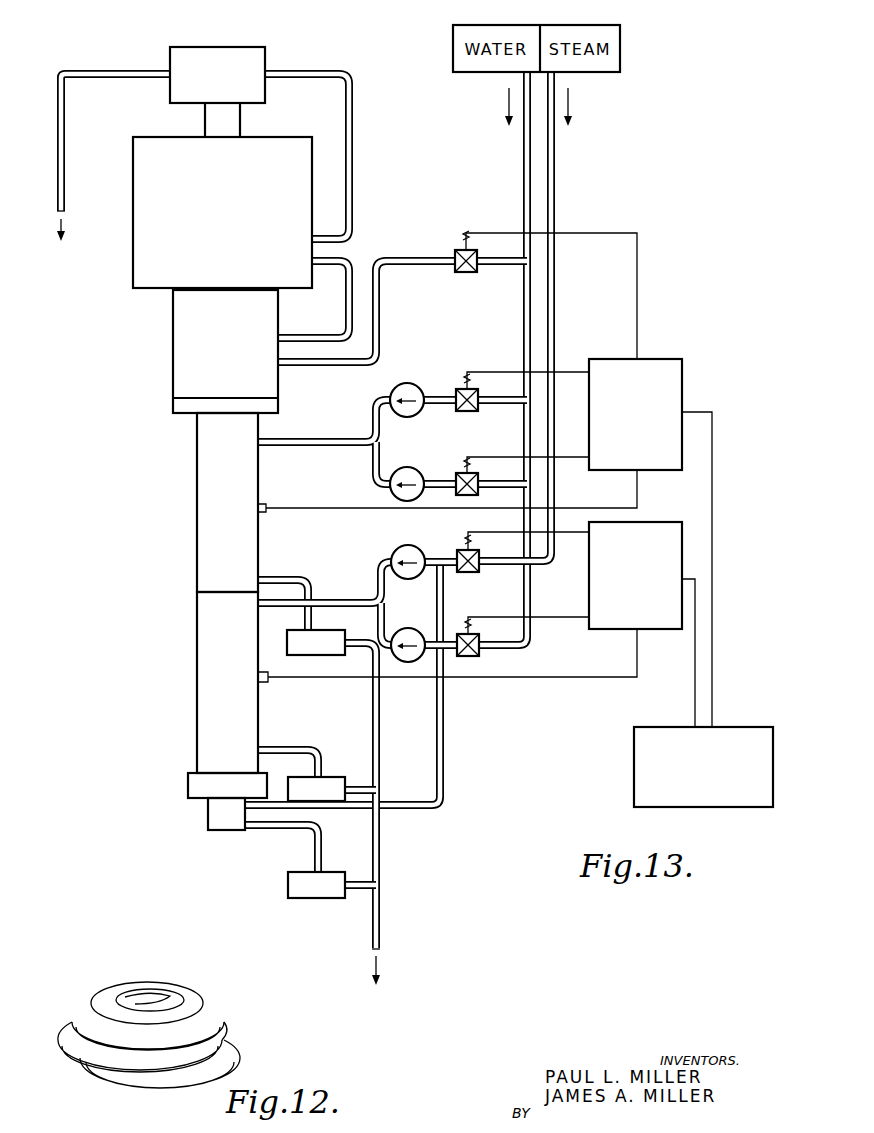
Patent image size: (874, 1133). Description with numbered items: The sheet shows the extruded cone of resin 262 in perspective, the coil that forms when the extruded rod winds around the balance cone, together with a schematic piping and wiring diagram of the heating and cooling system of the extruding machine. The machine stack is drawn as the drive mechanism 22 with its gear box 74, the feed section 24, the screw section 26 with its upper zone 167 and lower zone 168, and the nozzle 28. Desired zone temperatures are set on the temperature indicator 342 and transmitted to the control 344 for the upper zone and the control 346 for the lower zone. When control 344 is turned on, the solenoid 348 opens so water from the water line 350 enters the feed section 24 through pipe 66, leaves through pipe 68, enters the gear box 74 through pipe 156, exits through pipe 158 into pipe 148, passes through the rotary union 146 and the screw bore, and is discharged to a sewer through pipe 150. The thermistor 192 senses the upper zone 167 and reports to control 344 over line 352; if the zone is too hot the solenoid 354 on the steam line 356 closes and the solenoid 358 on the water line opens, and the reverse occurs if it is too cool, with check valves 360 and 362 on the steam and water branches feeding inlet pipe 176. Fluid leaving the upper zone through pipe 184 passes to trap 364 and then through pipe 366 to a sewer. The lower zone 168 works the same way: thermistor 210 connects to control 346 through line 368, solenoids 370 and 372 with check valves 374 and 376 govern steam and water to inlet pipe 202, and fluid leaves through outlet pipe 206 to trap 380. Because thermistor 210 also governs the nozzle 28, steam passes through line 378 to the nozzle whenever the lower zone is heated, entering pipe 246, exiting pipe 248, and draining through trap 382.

In FIG. 13, the drive mechanism 22 is at (204, 214).
In FIG. 13, the feed section 24 is at (152, 371).
In FIG. 13, the screw section 26 is at (189, 593).
In FIG. 13, the nozzle 28 is at (194, 820).
In FIG. 13, the pipe 66 is at (300, 364).
In FIG. 13, the pipe 68 is at (296, 338).
In FIG. 13, the gear box 74 is at (133, 222).
In FIG. 13, the rotary union 146 is at (264, 52).
In FIG. 13, the pipe 148 is at (283, 79).
In FIG. 13, the pipe 150 is at (127, 79).
In FIG. 13, the pipe 156 is at (330, 258).
In FIG. 13, the pipe 158 is at (330, 238).
In FIG. 13, the upper zone 167 is at (190, 526).
In FIG. 13, the lower zone 168 is at (190, 700).
In FIG. 13, the pipe 176 is at (280, 441).
In FIG. 13, the second pipe 184 is at (278, 577).
In FIG. 13, the thermistor 192 is at (262, 507).
In FIG. 13, the fluid inlet pipe 202 is at (267, 606).
In FIG. 13, the outlet pipe 206 is at (281, 750).
In FIG. 13, the thermistor 210 is at (265, 683).
In FIG. 13, the pipe 246 is at (323, 808).
In FIG. 13, the pipe 248 is at (265, 829).
In FIG. 12, the cone of resin 262 is at (222, 1020).
In FIG. 13, the temperature indicator 342 is at (634, 782).
In FIG. 13, the control 344 is at (646, 359).
In FIG. 13, the control 346 is at (642, 522).
In FIG. 13, the solenoid 348 is at (463, 274).
In FIG. 13, the water line 350 is at (522, 184).
In FIG. 13, the line 352 is at (322, 509).
In FIG. 13, the solenoid 354 is at (466, 412).
In FIG. 13, the steam line 356 is at (556, 306).
In FIG. 13, the solenoid 358 is at (465, 497).
In FIG. 13, the check valve 360 is at (412, 391).
In FIG. 13, the check valve 362 is at (412, 473).
In FIG. 13, the trap 364 is at (313, 657).
In FIG. 13, the pipe 366 is at (383, 742).
In FIG. 13, the line 368 is at (347, 690).
In FIG. 13, the solenoid 370 is at (467, 573).
In FIG. 13, the solenoid 372 is at (478, 656).
In FIG. 13, the check valve 374 is at (400, 552).
In FIG. 13, the check valve 376 is at (420, 623).
In FIG. 13, the line 378 is at (446, 742).
In FIG. 13, the trap 380 is at (330, 777).
In FIG. 13, the trap 382 is at (321, 899).